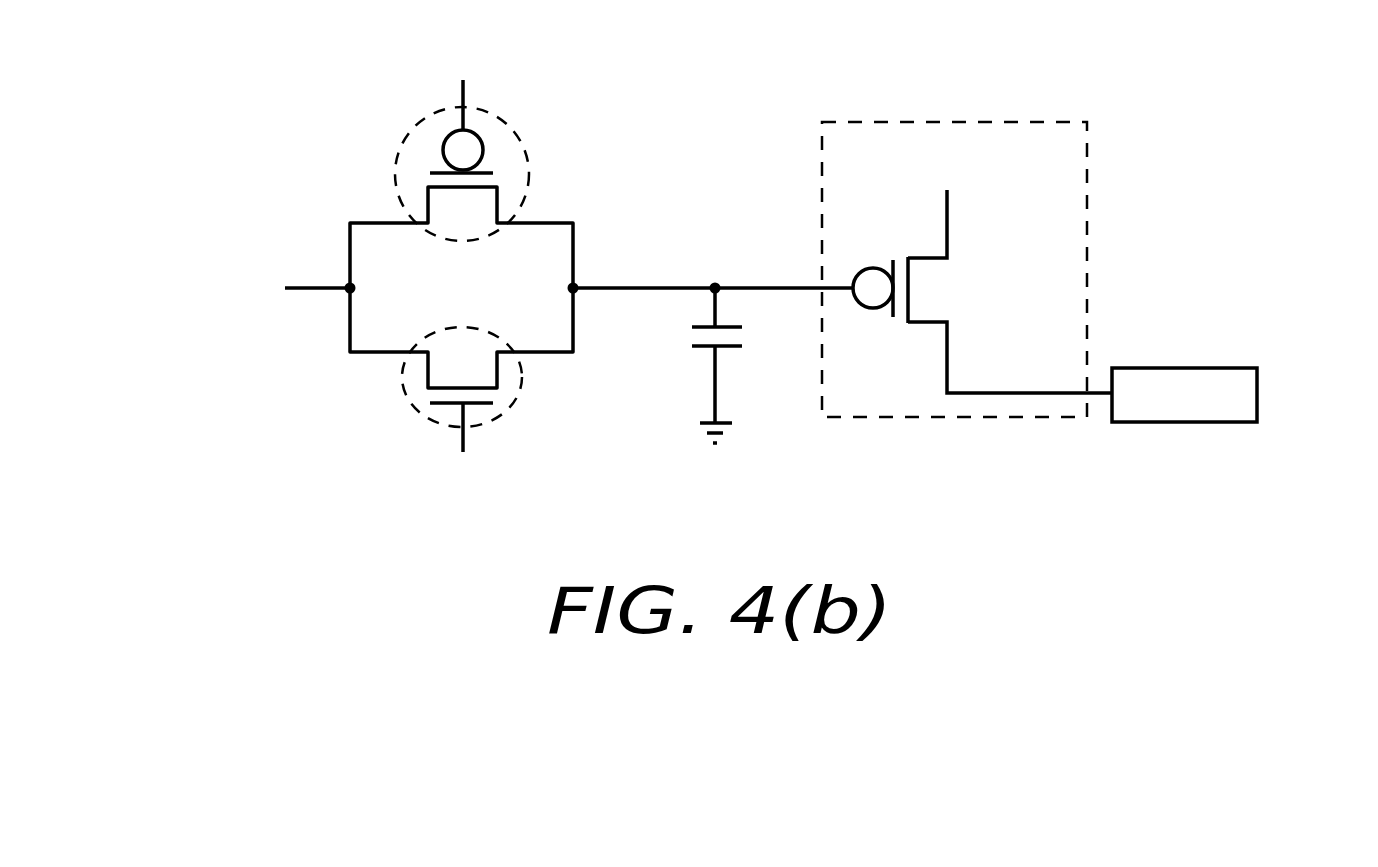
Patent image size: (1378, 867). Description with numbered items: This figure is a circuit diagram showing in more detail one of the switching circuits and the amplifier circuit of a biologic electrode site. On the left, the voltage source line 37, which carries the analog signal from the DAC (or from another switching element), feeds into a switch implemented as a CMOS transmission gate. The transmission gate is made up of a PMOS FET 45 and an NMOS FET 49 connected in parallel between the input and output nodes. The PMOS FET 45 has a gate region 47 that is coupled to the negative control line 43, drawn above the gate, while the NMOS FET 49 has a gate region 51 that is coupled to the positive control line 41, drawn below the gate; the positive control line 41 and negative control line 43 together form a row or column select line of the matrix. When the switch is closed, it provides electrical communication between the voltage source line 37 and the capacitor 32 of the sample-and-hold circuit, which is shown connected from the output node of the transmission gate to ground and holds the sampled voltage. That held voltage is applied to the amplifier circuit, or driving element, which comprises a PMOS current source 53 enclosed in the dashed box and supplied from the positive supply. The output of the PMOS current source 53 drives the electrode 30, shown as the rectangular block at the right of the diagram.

The electrode 30 is at (1257, 398).
The capacitor 32 is at (705, 348).
The voltage source line 37 is at (313, 288).
The positive control line 41 is at (489, 81).
The negative control line 43 is at (489, 454).
The PMOS FET 45 is at (425, 124).
The gate region 47 is at (483, 172).
The NMOS FET 49 is at (406, 387).
The gate region 51 is at (478, 404).
The PMOS current source 53 is at (1097, 184).